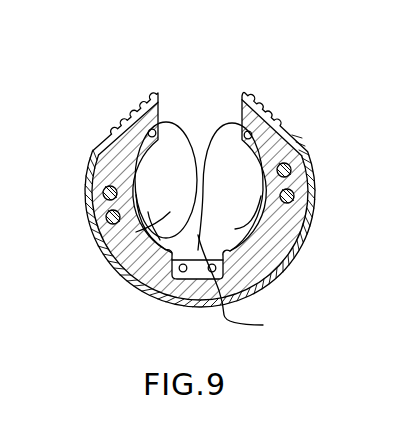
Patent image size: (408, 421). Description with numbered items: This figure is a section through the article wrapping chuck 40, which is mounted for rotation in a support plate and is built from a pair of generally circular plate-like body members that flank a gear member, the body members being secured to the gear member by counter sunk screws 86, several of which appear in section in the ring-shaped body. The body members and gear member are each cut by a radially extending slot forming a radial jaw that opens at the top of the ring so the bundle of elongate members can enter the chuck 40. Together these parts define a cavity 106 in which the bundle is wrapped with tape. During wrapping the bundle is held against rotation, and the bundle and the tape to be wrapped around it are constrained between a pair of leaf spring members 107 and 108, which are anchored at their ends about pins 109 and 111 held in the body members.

The article wrapping chuck 40 is at (179, 79).
The counter sunk screws 86 is at (104, 196).
The cavity 106 is at (138, 228).
The leaf spring member 107 is at (187, 153).
The leaf spring member 108 is at (205, 166).
The pin 109 is at (181, 295).
The pin 111 is at (247, 284).